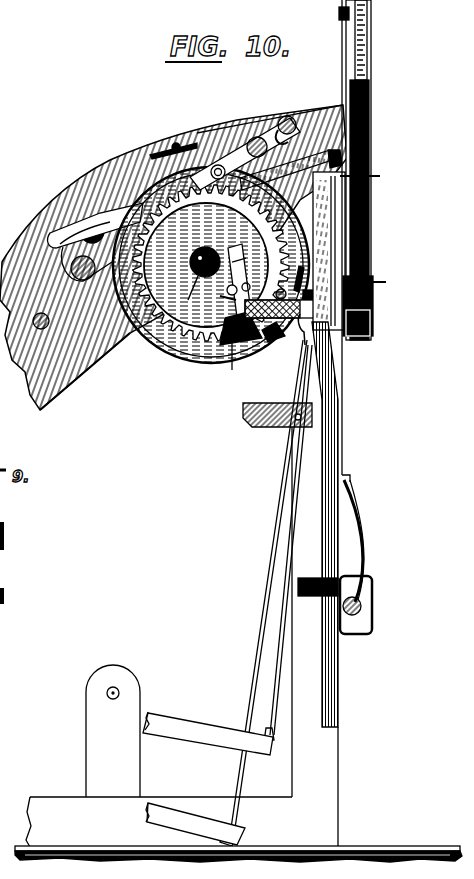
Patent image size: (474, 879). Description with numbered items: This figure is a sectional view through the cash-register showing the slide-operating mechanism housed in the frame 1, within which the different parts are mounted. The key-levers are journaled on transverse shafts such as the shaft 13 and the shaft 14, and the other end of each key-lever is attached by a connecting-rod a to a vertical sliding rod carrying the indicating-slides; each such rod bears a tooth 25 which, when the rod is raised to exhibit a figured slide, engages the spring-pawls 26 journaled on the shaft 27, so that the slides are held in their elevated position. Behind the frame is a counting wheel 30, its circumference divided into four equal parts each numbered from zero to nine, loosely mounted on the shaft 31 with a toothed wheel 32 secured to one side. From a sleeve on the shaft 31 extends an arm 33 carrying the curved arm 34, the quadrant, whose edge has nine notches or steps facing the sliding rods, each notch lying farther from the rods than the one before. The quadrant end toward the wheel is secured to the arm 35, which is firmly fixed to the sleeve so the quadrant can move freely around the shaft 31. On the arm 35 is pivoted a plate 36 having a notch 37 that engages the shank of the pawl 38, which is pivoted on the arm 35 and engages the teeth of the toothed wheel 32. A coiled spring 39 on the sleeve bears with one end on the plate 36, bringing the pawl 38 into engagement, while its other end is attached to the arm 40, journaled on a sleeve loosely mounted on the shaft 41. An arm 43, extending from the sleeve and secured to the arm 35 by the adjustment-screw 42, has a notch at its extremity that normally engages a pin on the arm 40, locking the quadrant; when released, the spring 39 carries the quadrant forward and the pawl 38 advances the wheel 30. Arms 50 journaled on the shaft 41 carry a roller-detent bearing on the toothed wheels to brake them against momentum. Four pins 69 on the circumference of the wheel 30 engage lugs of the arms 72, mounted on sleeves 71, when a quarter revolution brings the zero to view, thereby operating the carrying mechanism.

The frame 1 is at (238, 763).
The shaft 13 is at (358, 170).
The shaft 14 is at (318, 423).
The tooth 25 is at (351, 472).
The spring-pawl 26 is at (366, 541).
The shaft 27 is at (335, 605).
The wheel 30 is at (196, 362).
The shaft 31 is at (193, 261).
The toothed wheel 32 is at (199, 333).
The arm 33 is at (274, 340).
The curved arm (quadrant) 34 is at (237, 359).
The arm 35 is at (192, 288).
The plate 36 is at (223, 302).
The notch 37 is at (234, 328).
The pawl 38 is at (205, 248).
The coiled spring 39 is at (248, 258).
The arm 40 is at (295, 284).
The shaft 41 is at (257, 137).
The adjustment-screw 42 is at (295, 309).
The arm 43 is at (277, 415).
The arm 50 is at (225, 167).
The pin 69 is at (93, 222).
The sleeve 71 is at (87, 268).
The arm 72 is at (95, 225).
The connecting-rod a is at (282, 497).